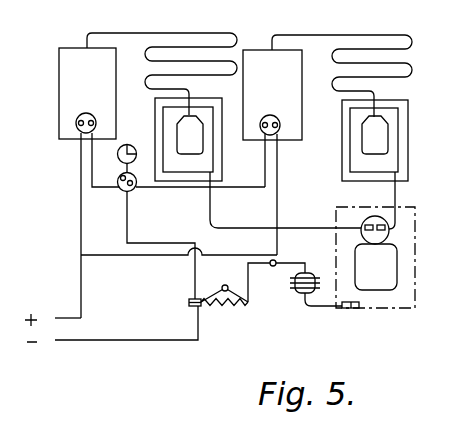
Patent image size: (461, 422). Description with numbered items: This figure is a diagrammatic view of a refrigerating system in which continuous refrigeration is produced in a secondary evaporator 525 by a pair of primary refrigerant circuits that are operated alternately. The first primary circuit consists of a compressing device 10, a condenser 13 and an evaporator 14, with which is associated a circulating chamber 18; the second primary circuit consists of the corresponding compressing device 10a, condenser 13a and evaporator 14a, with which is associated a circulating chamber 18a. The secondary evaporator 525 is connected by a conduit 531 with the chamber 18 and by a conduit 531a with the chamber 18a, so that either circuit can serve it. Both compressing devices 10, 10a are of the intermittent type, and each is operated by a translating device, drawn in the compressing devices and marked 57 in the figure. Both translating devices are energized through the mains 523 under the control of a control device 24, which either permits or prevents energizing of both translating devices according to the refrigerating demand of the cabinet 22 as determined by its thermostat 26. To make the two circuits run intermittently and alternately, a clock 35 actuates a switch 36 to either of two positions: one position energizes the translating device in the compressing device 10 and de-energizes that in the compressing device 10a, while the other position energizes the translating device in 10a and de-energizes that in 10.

The compressing device 10 is at (87, 93).
The compressing device 10a is at (272, 95).
The condenser 13 is at (218, 33).
The condenser 13a is at (412, 36).
The evaporator 14 is at (190, 135).
The evaporator 14a is at (375, 135).
The circulating chamber 18 is at (205, 162).
The circulating chamber 18a is at (392, 158).
The switch 57 is at (78, 117).
The clock 35 is at (129, 144).
The switch 36 is at (120, 193).
The conduit 531 is at (210, 211).
The conduit 531a is at (397, 193).
The secondary evaporator 525 is at (397, 250).
The cabinet 22 is at (415, 309).
The thermostat 26 is at (352, 309).
The control device 24 is at (243, 300).
The mains 523 is at (76, 341).